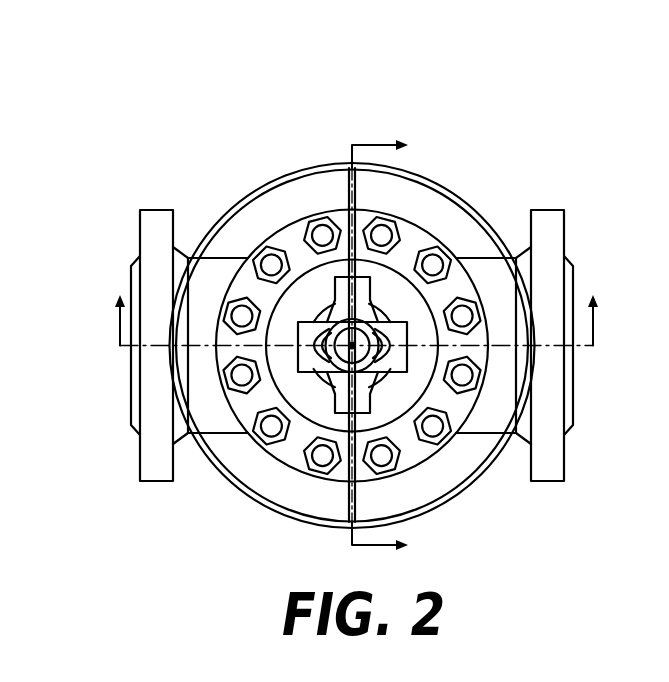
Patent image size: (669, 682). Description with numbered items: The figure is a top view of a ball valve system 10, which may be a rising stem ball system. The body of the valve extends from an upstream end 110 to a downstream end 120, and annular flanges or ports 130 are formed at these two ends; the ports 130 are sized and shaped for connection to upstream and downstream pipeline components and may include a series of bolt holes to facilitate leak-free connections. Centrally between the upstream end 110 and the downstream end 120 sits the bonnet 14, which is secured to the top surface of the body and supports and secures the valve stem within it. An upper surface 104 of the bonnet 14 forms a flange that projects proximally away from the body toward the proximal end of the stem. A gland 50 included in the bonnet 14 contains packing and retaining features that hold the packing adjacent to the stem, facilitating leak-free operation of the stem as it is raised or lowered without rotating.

The ball valve system 10 is at (197, 96).
The bonnet 14 is at (290, 460).
The gland 50 is at (384, 290).
The upper surface 104 is at (413, 452).
The upstream end 110 is at (139, 232).
The downstream end 120 is at (565, 212).
The ports 130 is at (153, 468).